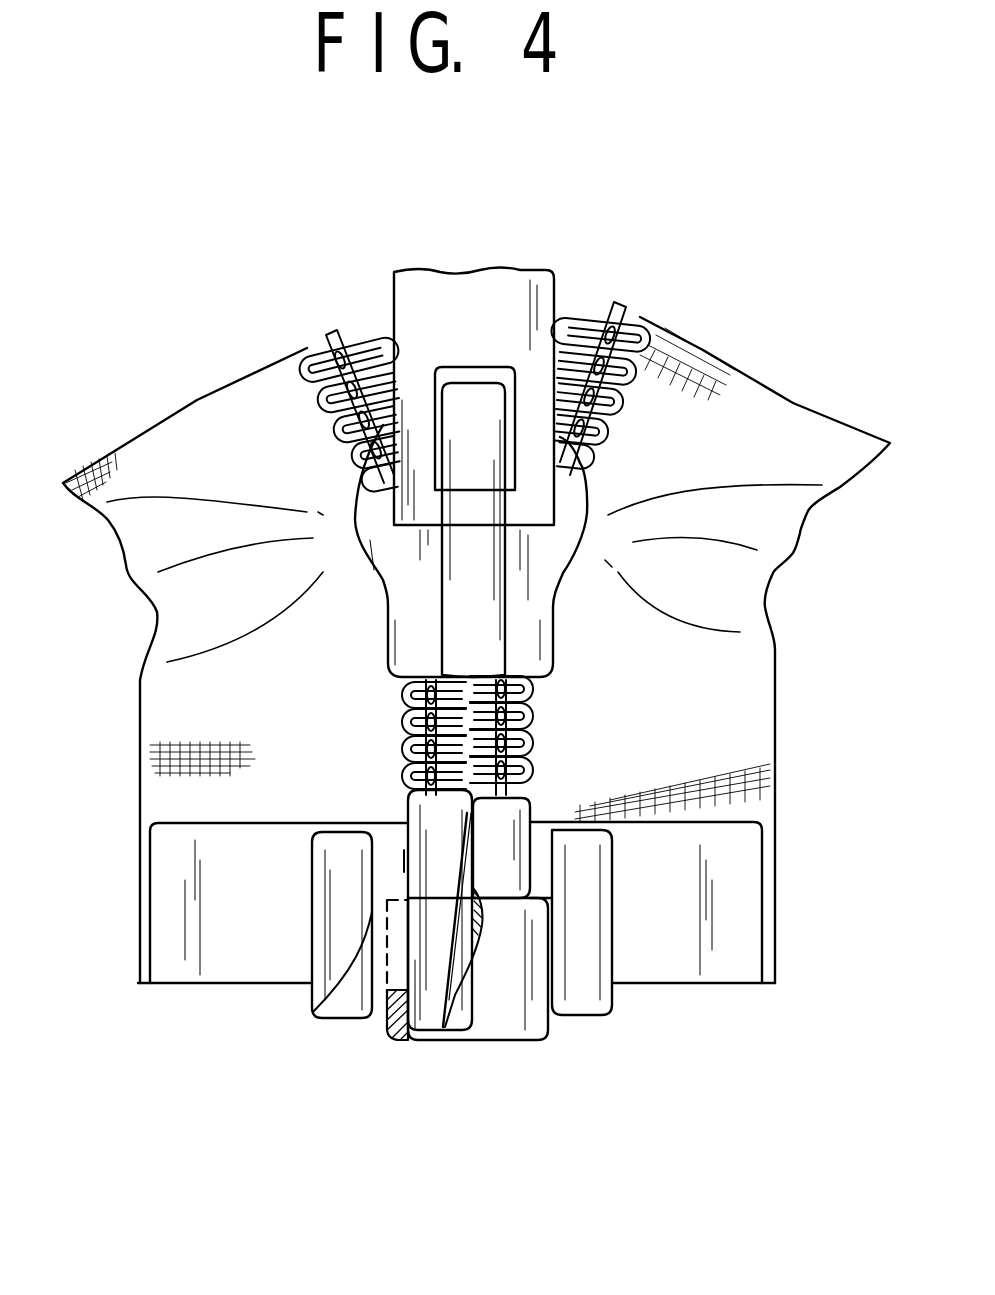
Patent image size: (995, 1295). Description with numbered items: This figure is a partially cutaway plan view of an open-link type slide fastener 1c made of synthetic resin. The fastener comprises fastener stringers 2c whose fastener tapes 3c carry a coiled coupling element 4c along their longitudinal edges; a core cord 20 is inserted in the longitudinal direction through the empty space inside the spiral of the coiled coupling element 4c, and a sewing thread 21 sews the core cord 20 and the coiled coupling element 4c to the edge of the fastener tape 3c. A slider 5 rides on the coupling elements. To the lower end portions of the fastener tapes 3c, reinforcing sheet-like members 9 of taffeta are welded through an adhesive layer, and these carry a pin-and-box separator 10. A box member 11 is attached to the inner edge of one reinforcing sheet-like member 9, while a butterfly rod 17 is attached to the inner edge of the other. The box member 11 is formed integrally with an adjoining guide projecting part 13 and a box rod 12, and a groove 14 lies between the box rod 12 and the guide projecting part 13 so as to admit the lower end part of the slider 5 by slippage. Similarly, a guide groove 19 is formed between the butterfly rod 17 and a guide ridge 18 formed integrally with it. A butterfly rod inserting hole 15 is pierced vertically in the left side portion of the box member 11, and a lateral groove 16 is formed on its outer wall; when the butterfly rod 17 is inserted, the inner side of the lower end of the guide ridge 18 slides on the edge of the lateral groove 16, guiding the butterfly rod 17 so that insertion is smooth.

The slide fastener 1c is at (538, 299).
The fastener stringers 2c is at (196, 399).
The fastener tapes 3c is at (148, 720).
The coiled coupling element 4c is at (552, 710).
The slider 5 is at (497, 268).
The reinforcing sheet-like members 9 is at (160, 925).
The pin-and-box separator 10 is at (459, 963).
The box member 11 is at (526, 1022).
The box rod 12 is at (514, 811).
The guide projecting part 13 is at (597, 848).
The groove 14 is at (512, 887).
The butterfly rod inserting hole 15 is at (412, 1036).
The lateral groove 16 is at (395, 988).
The butterfly rod 17 is at (420, 807).
The guide ridge 18 is at (322, 928).
The guide groove 19 is at (406, 862).
The core cord 20 is at (637, 318).
The sewing thread 21 is at (346, 348).